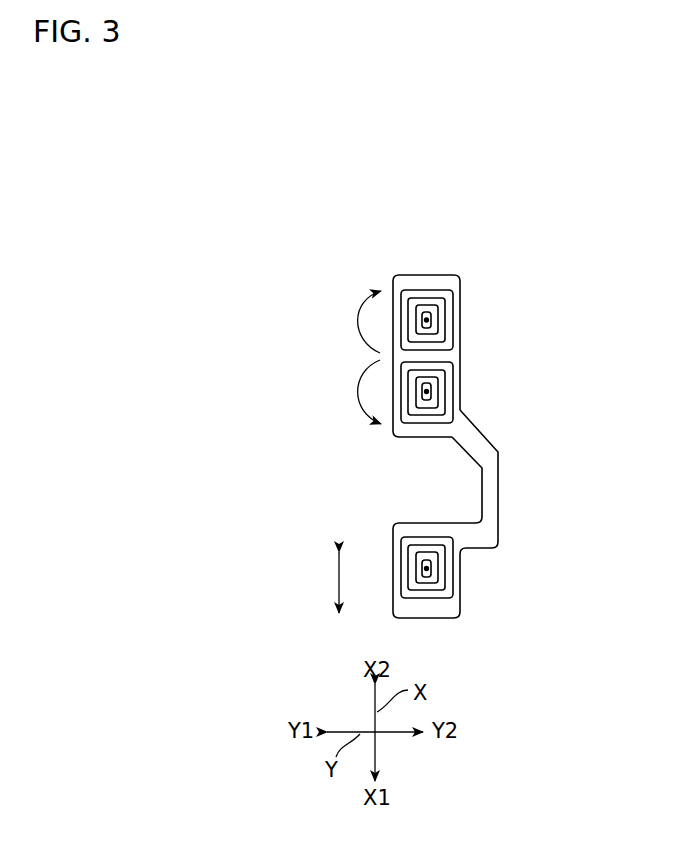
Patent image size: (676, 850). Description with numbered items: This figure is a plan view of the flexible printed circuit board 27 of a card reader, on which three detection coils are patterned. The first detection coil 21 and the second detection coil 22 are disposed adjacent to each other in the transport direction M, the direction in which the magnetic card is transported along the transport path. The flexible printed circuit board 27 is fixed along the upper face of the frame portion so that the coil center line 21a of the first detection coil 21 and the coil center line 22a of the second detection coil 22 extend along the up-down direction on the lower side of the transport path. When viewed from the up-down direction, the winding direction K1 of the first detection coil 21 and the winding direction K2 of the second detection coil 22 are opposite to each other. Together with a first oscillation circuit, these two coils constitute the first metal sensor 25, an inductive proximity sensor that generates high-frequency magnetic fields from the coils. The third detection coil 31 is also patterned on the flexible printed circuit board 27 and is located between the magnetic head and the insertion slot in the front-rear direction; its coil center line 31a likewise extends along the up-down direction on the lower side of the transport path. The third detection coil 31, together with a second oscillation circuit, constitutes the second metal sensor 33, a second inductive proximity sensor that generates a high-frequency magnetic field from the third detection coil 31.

The first detection coil 21 is at (457, 377).
The coil center line of the first detection coil 21a is at (432, 396).
The second detection coil 22 is at (457, 297).
The coil center line of the second detection coil 22a is at (432, 318).
The first metal sensor 25 is at (478, 341).
The flexible printed circuit board 27 is at (486, 447).
The third detection coil 31 is at (452, 583).
The coil center line of the third detection coil 31a is at (432, 565).
The second metal sensor 33 is at (480, 612).
The winding direction of the first detection coil K1 is at (357, 388).
The winding direction of the second detection coil K2 is at (357, 330).
The transport direction M is at (338, 582).